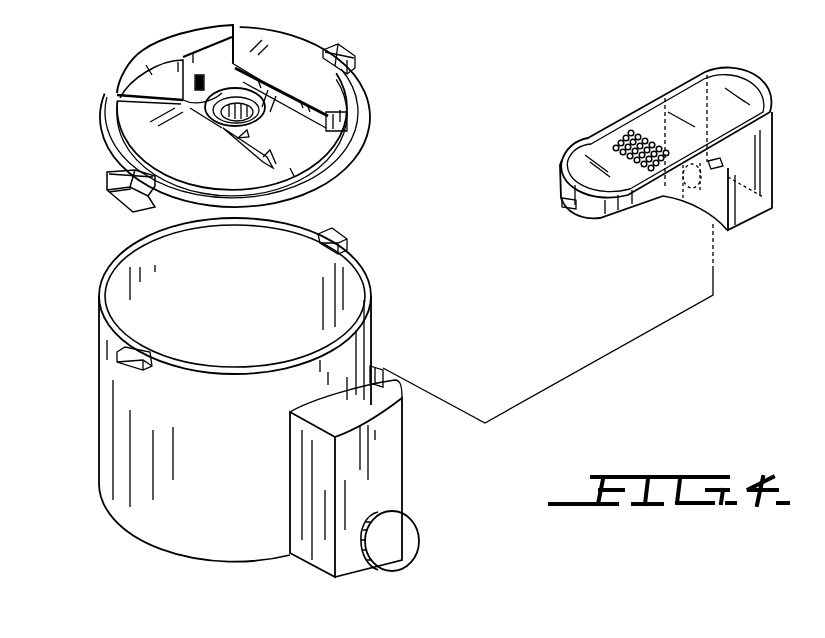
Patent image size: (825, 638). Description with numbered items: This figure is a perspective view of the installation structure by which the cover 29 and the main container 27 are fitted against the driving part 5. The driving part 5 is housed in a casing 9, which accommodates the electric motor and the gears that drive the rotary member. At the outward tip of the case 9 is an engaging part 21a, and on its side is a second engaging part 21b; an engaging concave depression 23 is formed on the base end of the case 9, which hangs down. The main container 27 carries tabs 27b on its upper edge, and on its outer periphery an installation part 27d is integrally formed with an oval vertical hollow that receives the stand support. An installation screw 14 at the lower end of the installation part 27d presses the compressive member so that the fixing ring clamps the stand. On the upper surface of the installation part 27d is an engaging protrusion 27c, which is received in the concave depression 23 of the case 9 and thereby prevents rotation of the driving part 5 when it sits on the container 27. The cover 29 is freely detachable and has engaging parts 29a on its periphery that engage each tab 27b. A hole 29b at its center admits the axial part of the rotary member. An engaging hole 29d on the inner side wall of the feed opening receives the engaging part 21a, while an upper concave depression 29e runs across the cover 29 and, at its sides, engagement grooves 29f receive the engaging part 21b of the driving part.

The driving part 5 is at (645, 102).
The casing 9 is at (768, 189).
The installation screw 14 is at (402, 537).
The engaging part 21a is at (573, 210).
The engaging part 21b is at (723, 163).
The engaging concave depression 23 is at (692, 190).
The main container 27 is at (400, 324).
The tabs 27b is at (148, 347).
The engaging protrusion 27c is at (383, 378).
The installation part 27d is at (392, 455).
The cover 29 is at (402, 104).
The engaging part 29a is at (353, 75).
The hole 29b is at (250, 109).
The engaging hole 29d is at (206, 84).
The upper concave depression 29e is at (243, 134).
The engagement grooves 29f is at (270, 155).